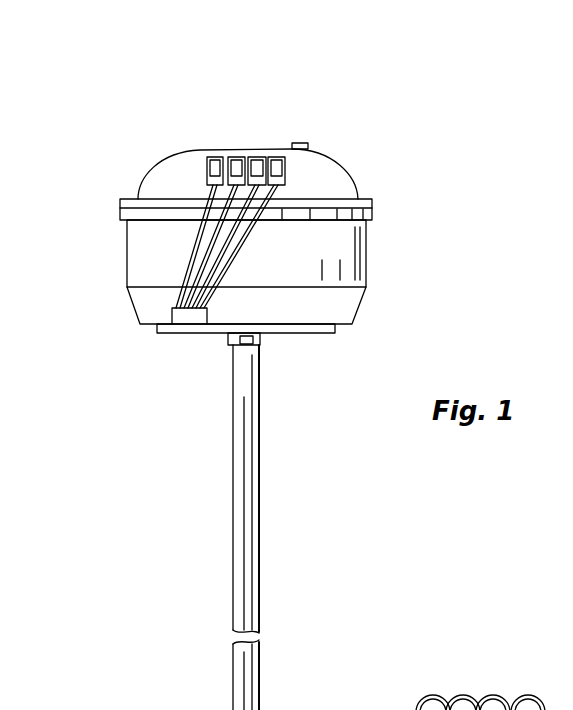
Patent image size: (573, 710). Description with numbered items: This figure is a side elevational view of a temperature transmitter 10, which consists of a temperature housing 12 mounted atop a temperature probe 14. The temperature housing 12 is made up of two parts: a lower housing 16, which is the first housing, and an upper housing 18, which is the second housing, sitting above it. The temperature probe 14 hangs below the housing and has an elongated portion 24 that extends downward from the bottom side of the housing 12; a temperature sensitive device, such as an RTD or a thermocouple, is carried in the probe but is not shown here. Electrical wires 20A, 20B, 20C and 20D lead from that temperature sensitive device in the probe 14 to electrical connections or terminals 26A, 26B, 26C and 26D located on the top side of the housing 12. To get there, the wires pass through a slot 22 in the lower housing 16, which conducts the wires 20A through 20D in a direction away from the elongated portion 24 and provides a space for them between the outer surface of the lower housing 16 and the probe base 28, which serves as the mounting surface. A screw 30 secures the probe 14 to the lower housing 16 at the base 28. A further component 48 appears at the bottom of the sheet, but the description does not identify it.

The temperature transmitter 10 is at (446, 200).
The temperature housing 12 is at (134, 159).
The temperature probe 14 is at (222, 426).
The lower housing 16 is at (126, 278).
The upper housing 18 is at (177, 148).
The electrical wire 20A is at (257, 230).
The electrical wire 20B is at (228, 245).
The electrical wire 20C is at (213, 230).
The electrical wire 20D is at (190, 270).
The slot 22 is at (173, 320).
The elongated portion 24 is at (252, 380).
The electrical connection 26A is at (277, 157).
The electrical connection 26B is at (259, 157).
The electrical connection 26C is at (233, 157).
The electrical connection 26D is at (211, 157).
The probe base 28 is at (315, 333).
The screw 30 is at (247, 346).
The coil 48 is at (427, 698).